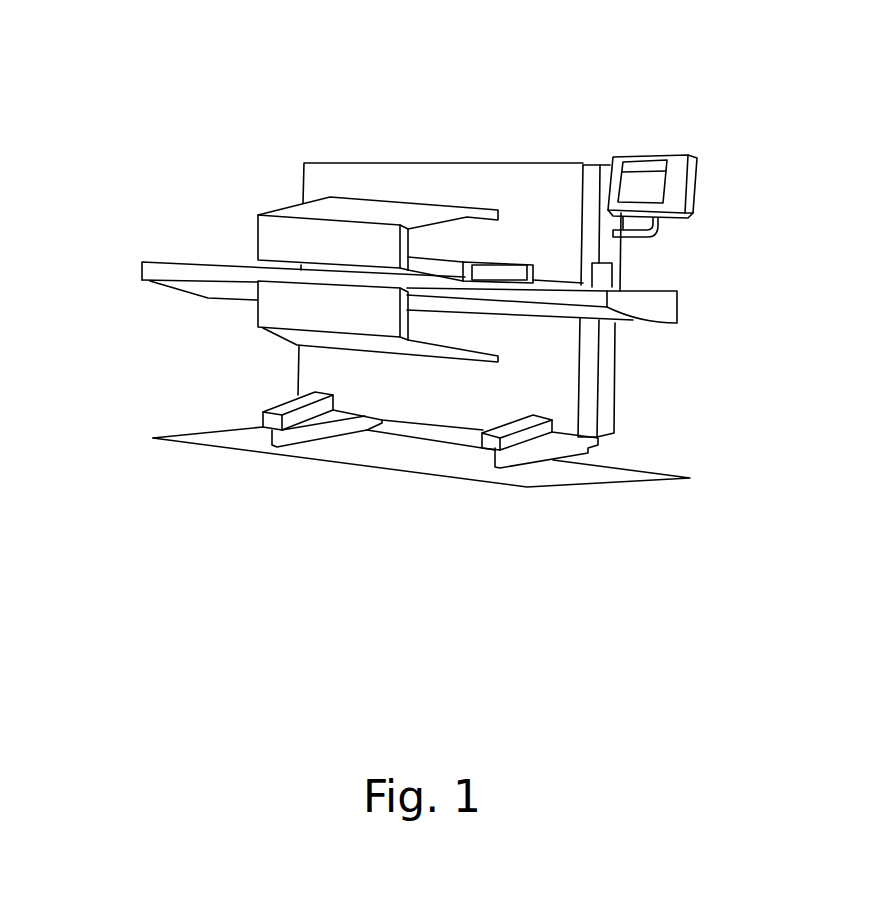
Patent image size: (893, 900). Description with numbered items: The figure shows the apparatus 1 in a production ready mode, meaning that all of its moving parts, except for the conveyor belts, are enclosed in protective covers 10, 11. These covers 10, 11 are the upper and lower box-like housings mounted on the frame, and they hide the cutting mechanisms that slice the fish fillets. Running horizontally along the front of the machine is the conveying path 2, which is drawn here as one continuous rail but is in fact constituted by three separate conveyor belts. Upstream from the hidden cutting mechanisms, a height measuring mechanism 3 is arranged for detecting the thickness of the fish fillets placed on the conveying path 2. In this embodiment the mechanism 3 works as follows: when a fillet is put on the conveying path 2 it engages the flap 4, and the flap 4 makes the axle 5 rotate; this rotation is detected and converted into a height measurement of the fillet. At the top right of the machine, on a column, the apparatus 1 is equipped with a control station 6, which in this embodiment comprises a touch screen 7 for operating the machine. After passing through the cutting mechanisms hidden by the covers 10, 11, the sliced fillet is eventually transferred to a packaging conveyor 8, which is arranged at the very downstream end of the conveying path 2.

The apparatus 1 is at (523, 88).
The conveying path 2 is at (622, 323).
The height measuring mechanism 3 is at (510, 277).
The flap 4 is at (510, 277).
The axle 5 is at (495, 258).
The control station 6 is at (695, 186).
The touch screen 7 is at (642, 183).
The packaging conveyor 8 is at (148, 273).
The protective cover 10 is at (352, 230).
The protective cover 11 is at (371, 318).